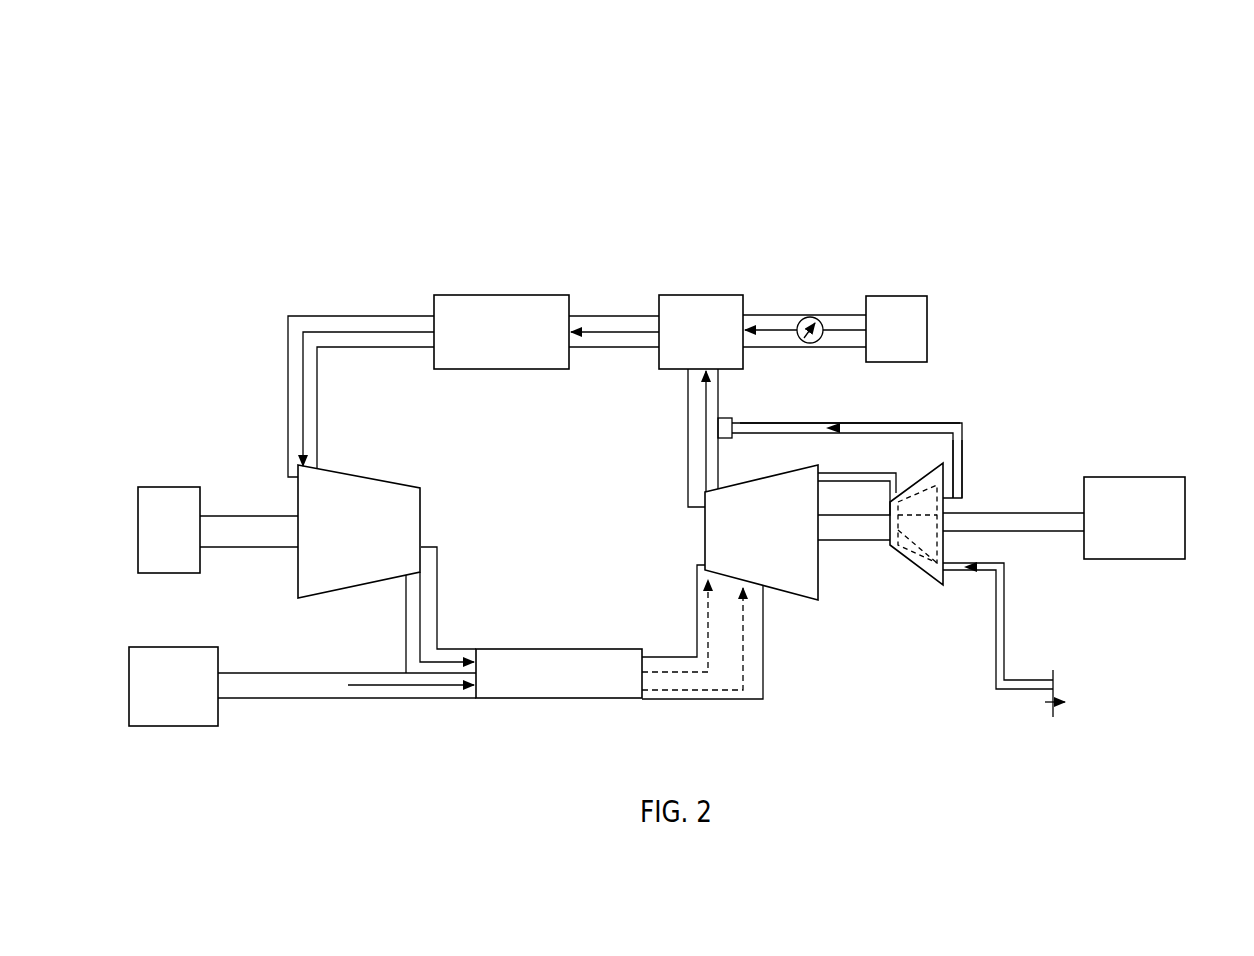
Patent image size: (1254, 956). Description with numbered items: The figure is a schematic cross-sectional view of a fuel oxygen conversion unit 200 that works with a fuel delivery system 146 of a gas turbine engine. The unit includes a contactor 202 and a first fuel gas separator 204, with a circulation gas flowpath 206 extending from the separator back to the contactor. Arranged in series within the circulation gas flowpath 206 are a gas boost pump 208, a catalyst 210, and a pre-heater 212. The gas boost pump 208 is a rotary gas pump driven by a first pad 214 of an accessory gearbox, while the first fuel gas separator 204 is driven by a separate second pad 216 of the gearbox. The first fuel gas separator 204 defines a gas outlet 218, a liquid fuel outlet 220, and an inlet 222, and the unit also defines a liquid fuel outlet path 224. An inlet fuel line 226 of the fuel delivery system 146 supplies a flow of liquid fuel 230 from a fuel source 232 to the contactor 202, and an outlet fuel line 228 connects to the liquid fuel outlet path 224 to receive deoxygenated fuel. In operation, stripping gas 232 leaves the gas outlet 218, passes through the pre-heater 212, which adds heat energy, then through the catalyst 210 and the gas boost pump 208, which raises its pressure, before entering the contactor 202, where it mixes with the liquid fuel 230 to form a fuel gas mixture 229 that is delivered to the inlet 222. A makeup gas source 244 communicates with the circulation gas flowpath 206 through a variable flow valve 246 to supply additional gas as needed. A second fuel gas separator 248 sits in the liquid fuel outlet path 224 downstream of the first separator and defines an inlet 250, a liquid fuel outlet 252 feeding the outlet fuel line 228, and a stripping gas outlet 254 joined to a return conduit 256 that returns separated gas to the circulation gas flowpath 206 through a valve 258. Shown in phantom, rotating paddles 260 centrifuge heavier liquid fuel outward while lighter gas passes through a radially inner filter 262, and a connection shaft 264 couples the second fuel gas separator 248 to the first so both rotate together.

The fuel oxygen conversion unit 200 is at (706, 137).
The contactor 202 is at (553, 648).
The first fuel gas separator 204 is at (820, 579).
The circulation gas flowpath 206 is at (323, 314).
The gas boost pump 208 is at (375, 478).
The catalyst 210 is at (497, 308).
The pre-heater 212 is at (703, 293).
The first pad of an accessory gearbox 214 is at (170, 500).
The second pad of the accessory gearbox 216 is at (1158, 476).
The gas outlet 218 is at (697, 494).
The liquid fuel outlet 220 is at (827, 471).
The inlet 222 is at (721, 582).
The liquid fuel outlet path 224 is at (896, 473).
The inlet fuel line 226 is at (363, 700).
The outlet fuel line 228 is at (1004, 638).
The fuel gas mixture 229 is at (761, 681).
The liquid fuel 230 is at (437, 688).
The stripping gas 232 is at (302, 390).
The makeup gas source 244 is at (902, 308).
The variable flow valve 246 is at (810, 308).
The second fuel gas separator 248 is at (928, 577).
The inlet 250 is at (905, 476).
The liquid fuel outlet 252 is at (970, 566).
The stripping gas outlet 254 is at (950, 506).
The return conduit 256 is at (852, 422).
The valve 258 is at (735, 412).
The paddles 260 is at (898, 553).
The radially inner filter 262 is at (885, 547).
The connection shaft 264 is at (880, 515).
The fuel delivery system 146 is at (326, 742).